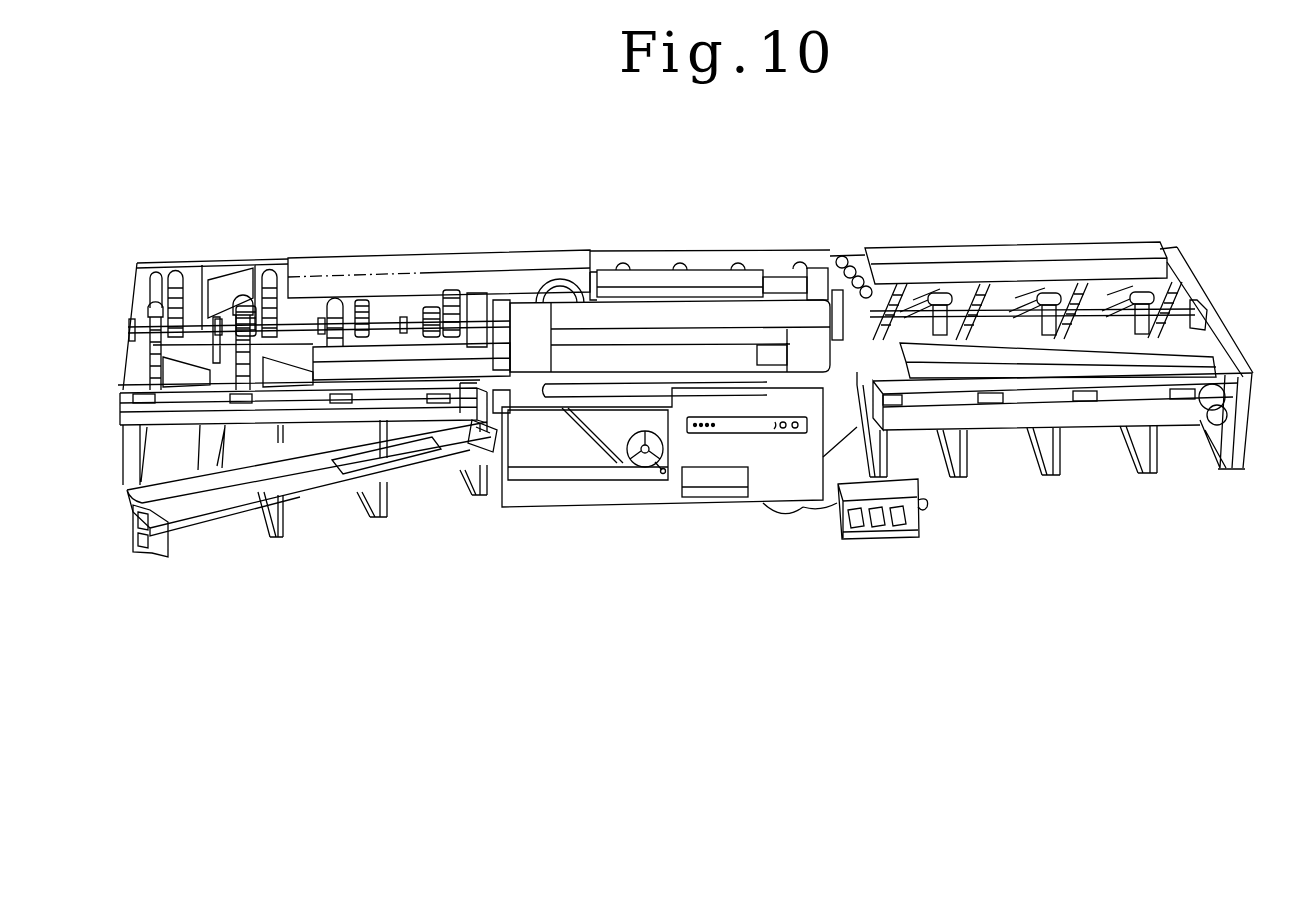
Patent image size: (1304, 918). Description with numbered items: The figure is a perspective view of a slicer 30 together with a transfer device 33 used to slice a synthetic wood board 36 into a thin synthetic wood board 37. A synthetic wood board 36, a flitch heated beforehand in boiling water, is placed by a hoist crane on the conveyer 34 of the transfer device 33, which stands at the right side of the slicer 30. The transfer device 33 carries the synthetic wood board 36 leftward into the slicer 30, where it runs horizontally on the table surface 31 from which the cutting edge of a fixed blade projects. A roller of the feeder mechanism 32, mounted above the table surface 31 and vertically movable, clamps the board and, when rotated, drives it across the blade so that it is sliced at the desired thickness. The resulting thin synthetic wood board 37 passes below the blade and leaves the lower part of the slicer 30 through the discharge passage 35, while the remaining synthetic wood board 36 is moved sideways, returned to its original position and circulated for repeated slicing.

The slicer 30 is at (700, 295).
The table surface 31 is at (633, 377).
The feeder mechanism 32 is at (642, 313).
The transfer device 33 is at (1025, 383).
The conveyer 34 is at (178, 286).
The discharge passage 35 is at (300, 500).
The synthetic wood board 36 is at (328, 360).
The thin synthetic wood board 37 is at (428, 452).